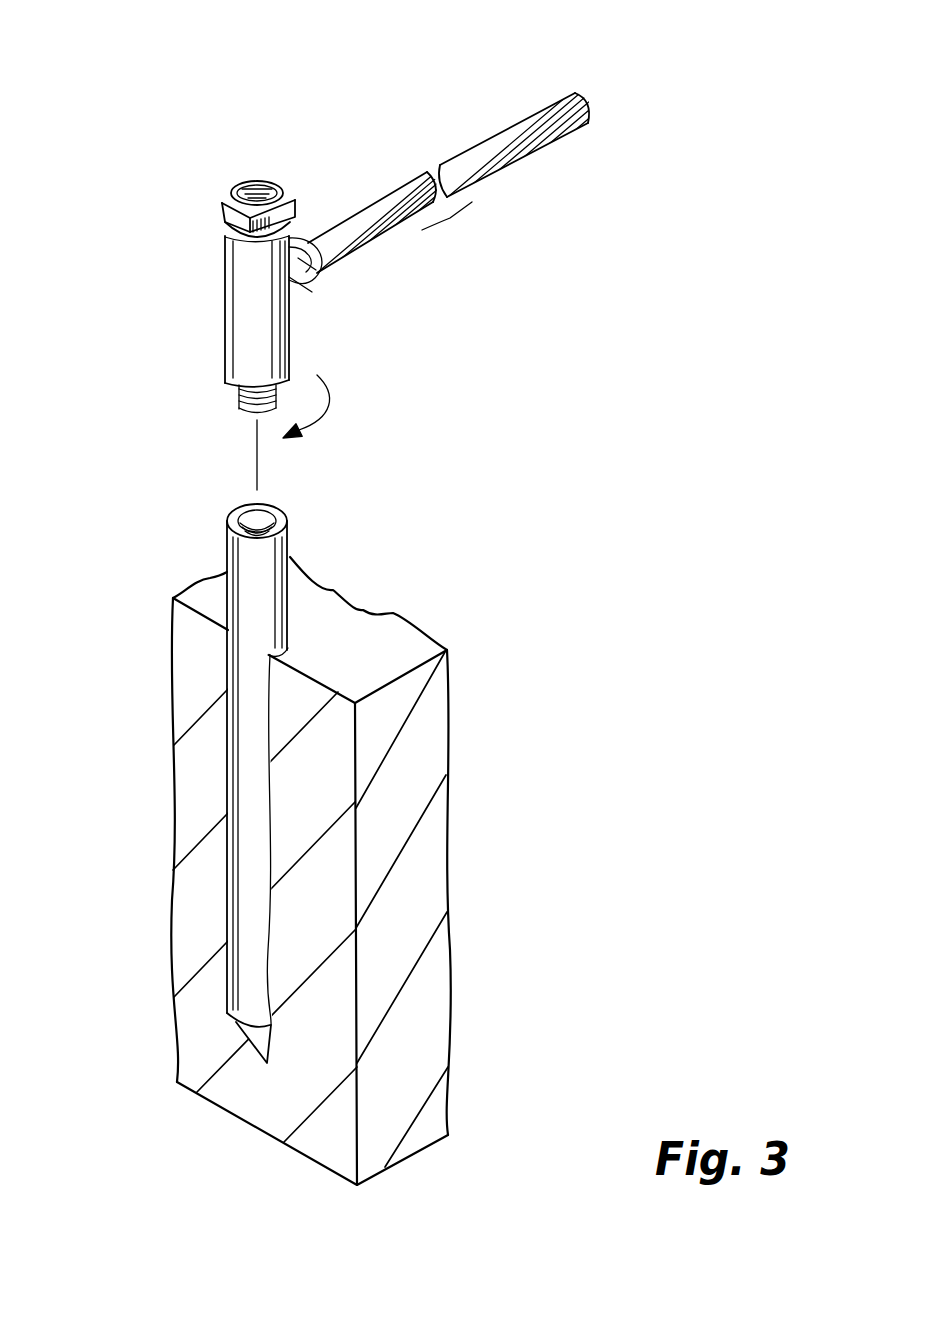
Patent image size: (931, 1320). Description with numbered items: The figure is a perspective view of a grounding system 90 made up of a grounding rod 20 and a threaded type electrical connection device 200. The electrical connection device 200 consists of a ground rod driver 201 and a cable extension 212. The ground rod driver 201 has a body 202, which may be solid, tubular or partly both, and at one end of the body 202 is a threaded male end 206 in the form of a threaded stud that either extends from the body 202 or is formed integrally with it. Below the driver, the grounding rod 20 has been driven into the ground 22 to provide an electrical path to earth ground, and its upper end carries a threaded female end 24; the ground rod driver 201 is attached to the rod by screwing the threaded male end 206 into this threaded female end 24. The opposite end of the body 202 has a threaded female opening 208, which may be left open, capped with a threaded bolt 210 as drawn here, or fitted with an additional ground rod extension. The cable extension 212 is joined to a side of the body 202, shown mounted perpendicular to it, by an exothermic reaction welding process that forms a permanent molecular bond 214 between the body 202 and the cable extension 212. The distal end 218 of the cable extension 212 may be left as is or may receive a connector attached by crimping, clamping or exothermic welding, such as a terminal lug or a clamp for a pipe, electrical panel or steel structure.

The electrical connection device 200 is at (340, 160).
The grounding system 90 is at (156, 552).
The ground rod driver 201 is at (213, 322).
The body 202 is at (230, 323).
The threaded male end 206 is at (242, 398).
The threaded female opening 208 is at (245, 175).
The threaded bolt 210 is at (265, 190).
The permanent molecular bond 214 is at (303, 287).
The distal end 218 is at (565, 100).
The cable extension 212 is at (453, 243).
The grounding rod 20 is at (228, 767).
The threaded female end 24 is at (247, 515).
The ground 22 is at (398, 633).